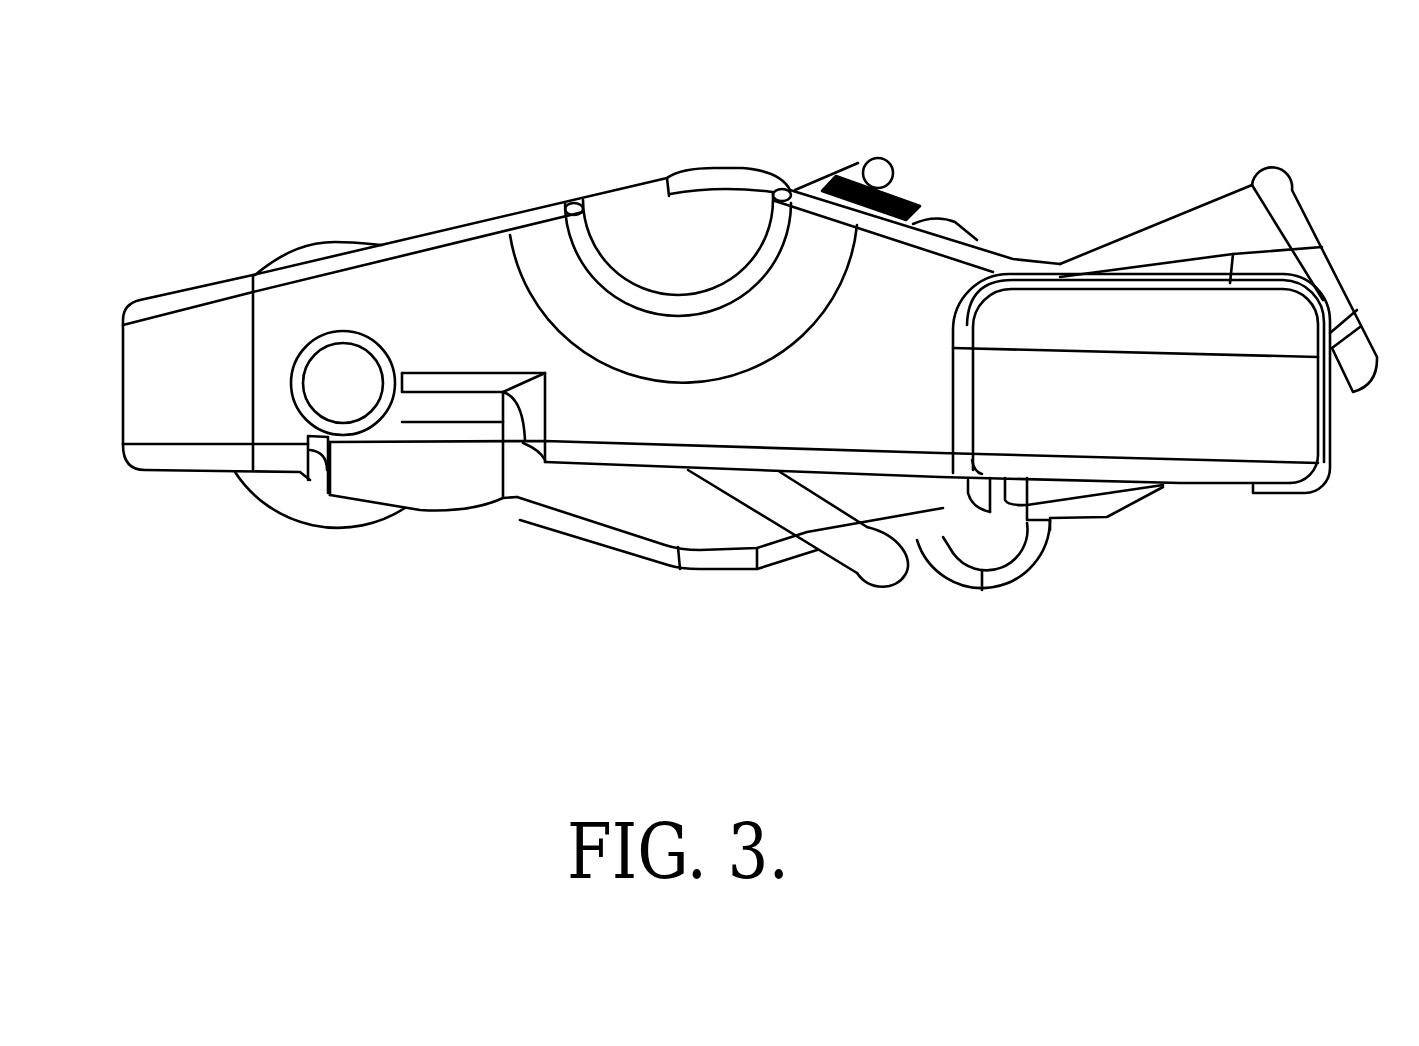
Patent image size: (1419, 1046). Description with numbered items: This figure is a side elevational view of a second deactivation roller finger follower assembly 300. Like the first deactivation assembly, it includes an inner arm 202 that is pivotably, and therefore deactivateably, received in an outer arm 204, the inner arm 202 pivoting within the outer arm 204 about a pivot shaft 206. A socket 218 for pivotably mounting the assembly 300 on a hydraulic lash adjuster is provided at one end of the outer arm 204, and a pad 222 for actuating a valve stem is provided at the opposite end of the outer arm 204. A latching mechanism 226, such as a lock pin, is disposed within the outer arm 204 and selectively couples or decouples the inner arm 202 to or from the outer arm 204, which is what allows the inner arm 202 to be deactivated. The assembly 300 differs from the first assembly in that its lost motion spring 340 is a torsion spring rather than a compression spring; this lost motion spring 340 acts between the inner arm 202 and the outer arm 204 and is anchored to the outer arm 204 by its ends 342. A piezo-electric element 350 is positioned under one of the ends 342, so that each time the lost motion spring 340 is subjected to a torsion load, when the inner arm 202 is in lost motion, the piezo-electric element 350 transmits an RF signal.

The inner arm 202 is at (613, 500).
The outer arm 204 is at (470, 267).
The pivot shaft 206 is at (343, 388).
The socket 218 is at (1213, 494).
The pad 222 is at (443, 510).
The latching mechanism 226 is at (1337, 270).
The second deactivation RFF assembly 300 is at (1278, 712).
The lost motion spring 340 is at (813, 530).
The ends 342 is at (850, 168).
The piezo-electric element 350 is at (907, 197).